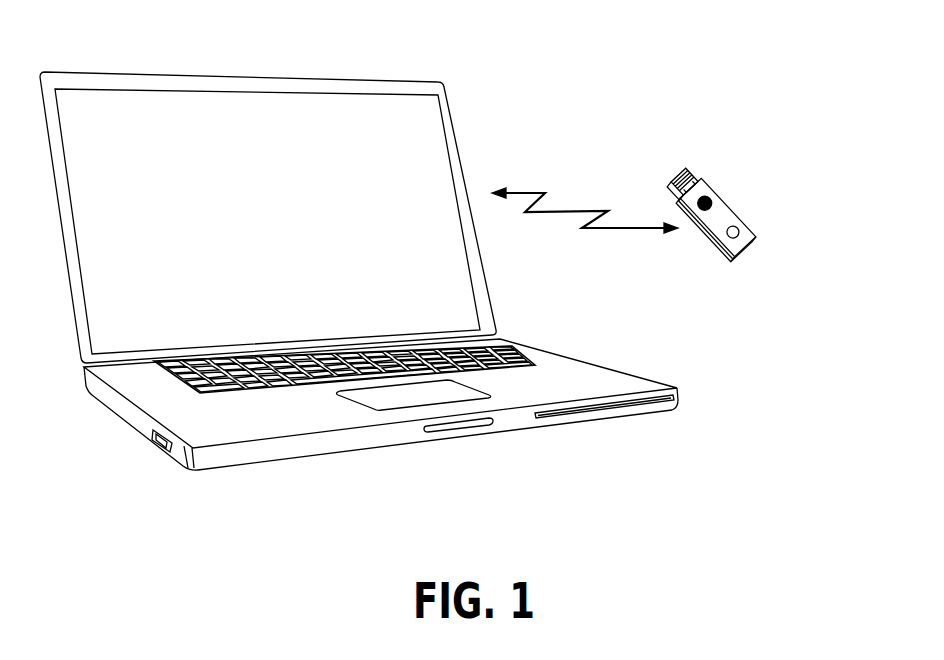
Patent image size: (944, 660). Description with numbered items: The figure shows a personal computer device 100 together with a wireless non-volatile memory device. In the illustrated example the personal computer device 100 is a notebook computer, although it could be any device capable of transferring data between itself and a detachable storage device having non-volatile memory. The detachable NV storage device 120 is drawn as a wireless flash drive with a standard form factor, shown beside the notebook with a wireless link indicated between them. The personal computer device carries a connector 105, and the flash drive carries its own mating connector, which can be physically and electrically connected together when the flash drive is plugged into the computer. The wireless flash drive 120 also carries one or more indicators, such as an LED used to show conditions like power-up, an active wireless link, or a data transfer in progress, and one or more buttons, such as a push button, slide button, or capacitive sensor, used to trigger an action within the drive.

The personal computer device 100 is at (577, 377).
The connector 105 is at (157, 448).
The detachable NV storage device 120 is at (734, 203).